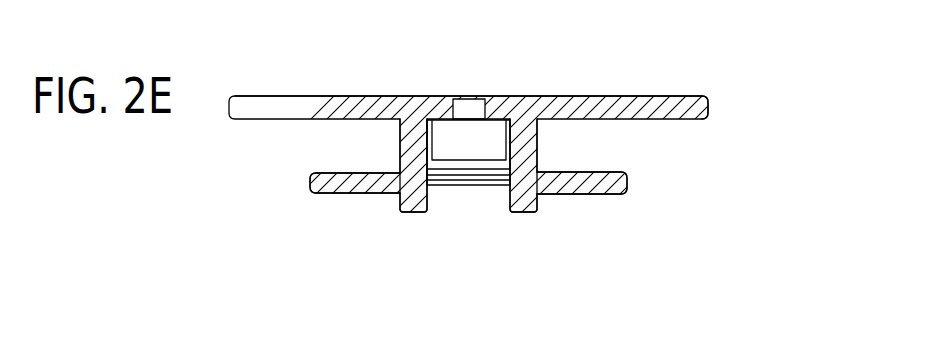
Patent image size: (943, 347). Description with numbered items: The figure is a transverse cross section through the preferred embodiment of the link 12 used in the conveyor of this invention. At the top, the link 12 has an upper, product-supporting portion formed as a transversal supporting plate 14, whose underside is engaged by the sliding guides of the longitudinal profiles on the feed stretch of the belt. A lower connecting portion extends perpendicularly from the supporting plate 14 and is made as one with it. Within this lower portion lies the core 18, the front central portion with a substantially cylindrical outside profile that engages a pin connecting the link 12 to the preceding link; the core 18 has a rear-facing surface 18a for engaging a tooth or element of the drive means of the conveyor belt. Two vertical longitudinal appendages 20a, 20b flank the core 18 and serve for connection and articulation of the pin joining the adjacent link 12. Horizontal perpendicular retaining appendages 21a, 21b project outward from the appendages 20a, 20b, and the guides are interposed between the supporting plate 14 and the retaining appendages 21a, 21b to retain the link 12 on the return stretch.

The link 12 is at (635, 82).
The transversal supporting plate 14 is at (723, 100).
The core 18 is at (485, 189).
The rear-facing surface 18a is at (458, 140).
The longitudinal appendage 20a is at (412, 145).
The longitudinal appendage 20b is at (537, 143).
The horizontal perpendicular retaining appendage 21a is at (322, 190).
The horizontal perpendicular retaining appendage 21b is at (623, 188).